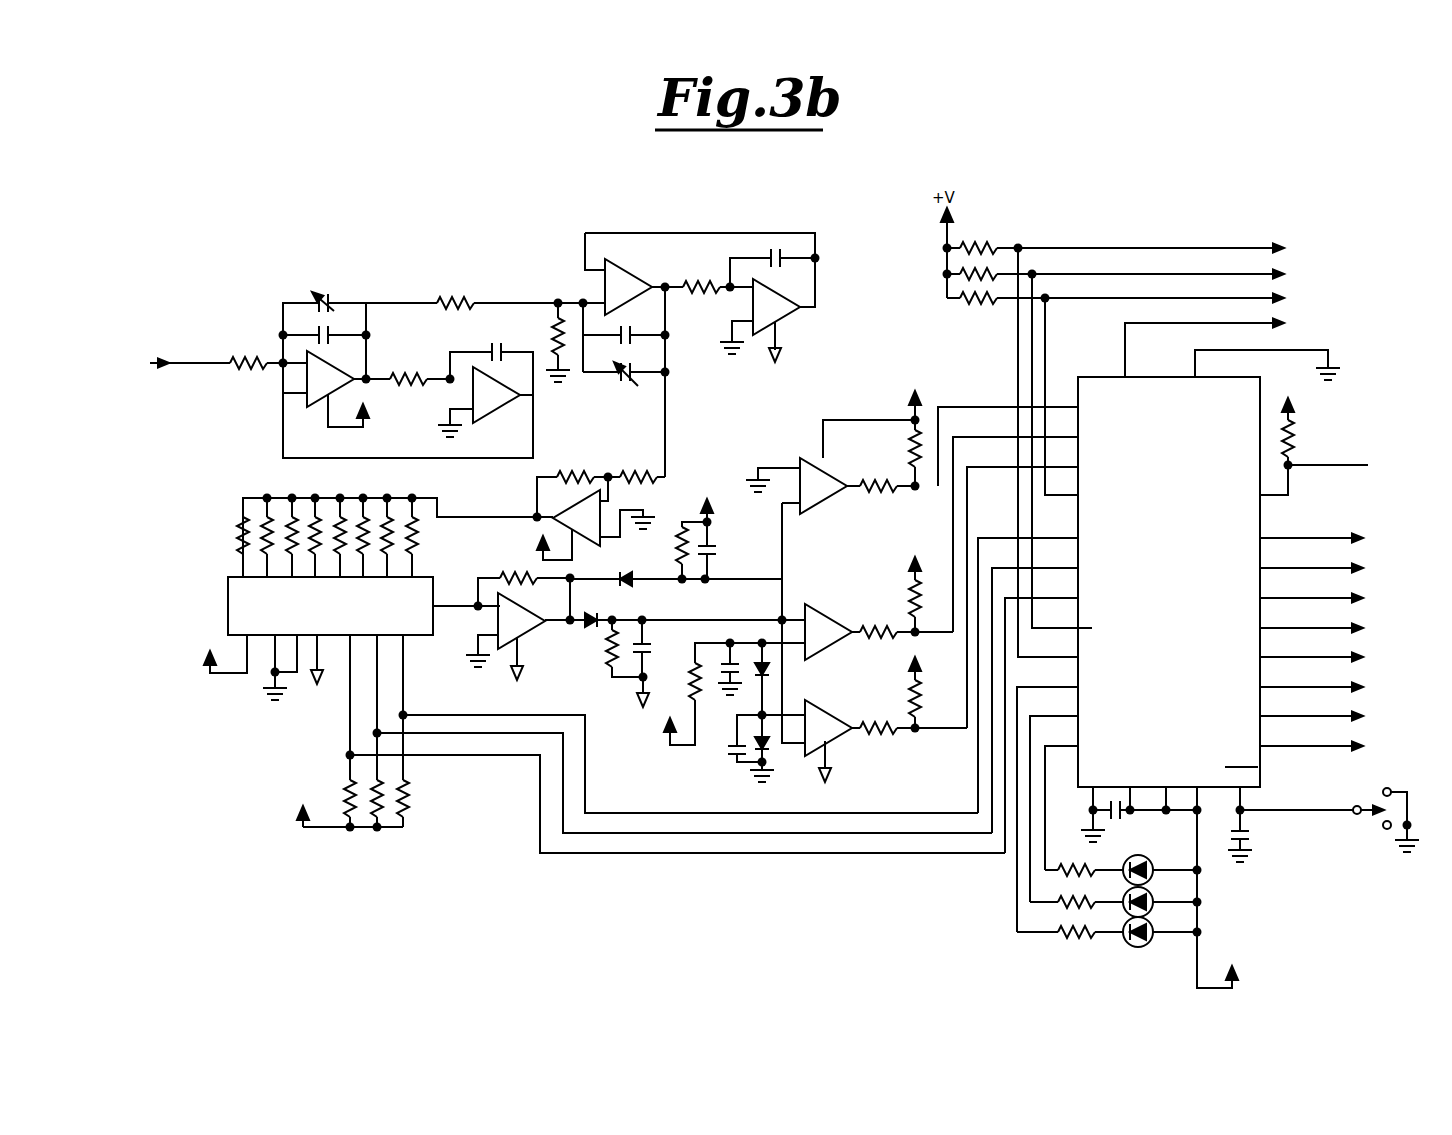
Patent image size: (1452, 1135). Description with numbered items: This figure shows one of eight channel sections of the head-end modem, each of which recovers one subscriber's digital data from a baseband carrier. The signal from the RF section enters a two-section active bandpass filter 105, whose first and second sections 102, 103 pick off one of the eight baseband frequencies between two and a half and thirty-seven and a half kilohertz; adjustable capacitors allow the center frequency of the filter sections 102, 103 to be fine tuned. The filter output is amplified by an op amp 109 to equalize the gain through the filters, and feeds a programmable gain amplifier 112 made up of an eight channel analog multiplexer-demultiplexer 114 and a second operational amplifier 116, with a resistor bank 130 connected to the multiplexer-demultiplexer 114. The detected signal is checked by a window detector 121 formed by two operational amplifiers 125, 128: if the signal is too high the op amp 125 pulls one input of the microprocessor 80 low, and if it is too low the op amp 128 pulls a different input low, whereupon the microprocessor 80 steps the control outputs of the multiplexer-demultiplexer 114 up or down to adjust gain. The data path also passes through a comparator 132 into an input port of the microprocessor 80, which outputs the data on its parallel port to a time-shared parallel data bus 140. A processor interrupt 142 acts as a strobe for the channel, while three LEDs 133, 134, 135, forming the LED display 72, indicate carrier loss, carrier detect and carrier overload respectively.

The LED displays 72 is at (1258, 953).
The microprocessor 80 is at (1192, 455).
The first filter section 102 is at (420, 276).
The second filter section 103 is at (567, 230).
The active bandpass filter 105 is at (728, 385).
The op amp 109 is at (650, 493).
The programmable gain amplifier 112 is at (288, 734).
The eight channel analog multiplexer-demultiplexer 114 is at (228, 604).
The second operational amplifier 116 is at (497, 622).
The window detector 121 is at (905, 749).
The operational amplifier 125 is at (827, 605).
The operational amplifier 128 is at (833, 705).
The resistor bank 130 is at (223, 530).
The comparator 132 is at (800, 453).
The red LED 133 is at (1127, 945).
The green LED 134 is at (1127, 897).
The yellow LED 135 is at (1139, 856).
The parallel data bus 140 is at (1330, 522).
The processor interrupt 142 is at (1309, 445).